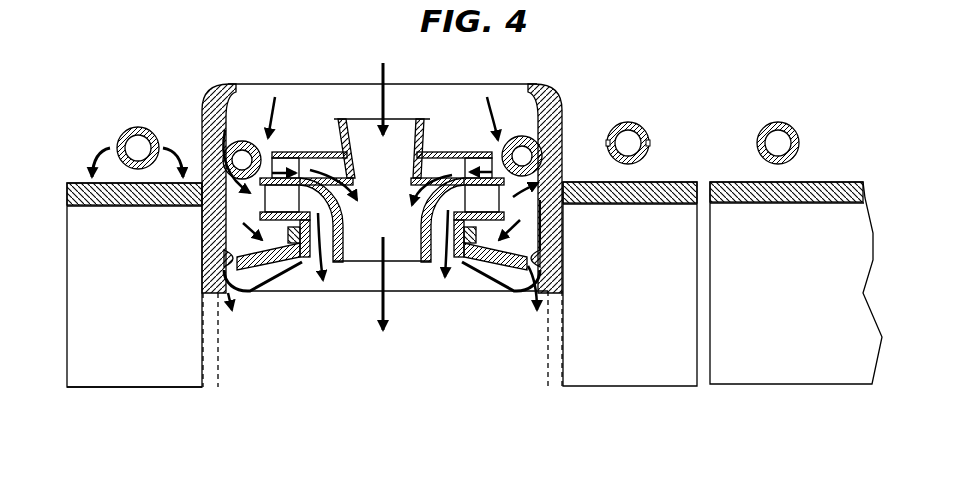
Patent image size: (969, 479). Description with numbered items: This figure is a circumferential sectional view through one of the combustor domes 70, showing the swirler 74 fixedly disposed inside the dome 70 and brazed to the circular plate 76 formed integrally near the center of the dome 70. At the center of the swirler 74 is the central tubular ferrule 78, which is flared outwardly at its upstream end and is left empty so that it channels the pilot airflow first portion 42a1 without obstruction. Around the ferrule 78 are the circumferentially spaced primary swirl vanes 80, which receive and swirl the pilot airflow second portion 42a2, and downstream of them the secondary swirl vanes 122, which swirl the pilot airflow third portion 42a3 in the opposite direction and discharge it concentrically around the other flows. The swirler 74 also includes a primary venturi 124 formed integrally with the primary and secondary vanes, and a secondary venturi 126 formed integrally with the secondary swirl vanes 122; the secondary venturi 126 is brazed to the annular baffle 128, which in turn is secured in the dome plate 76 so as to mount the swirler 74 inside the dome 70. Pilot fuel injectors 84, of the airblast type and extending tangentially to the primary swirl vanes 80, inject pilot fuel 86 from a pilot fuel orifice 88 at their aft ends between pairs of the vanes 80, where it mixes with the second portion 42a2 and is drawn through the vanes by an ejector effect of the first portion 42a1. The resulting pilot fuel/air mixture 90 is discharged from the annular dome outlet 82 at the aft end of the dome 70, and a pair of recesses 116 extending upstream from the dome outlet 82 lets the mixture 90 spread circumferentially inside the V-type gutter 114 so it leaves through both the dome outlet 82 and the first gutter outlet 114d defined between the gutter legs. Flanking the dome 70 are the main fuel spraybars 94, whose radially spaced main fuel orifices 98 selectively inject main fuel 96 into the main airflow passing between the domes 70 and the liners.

The pilot airflow first portion 42a1 is at (384, 76).
The pilot airflow second portion 42a2 is at (490, 100).
The pilot airflow third portion 42a3 is at (563, 212).
The dome 70 is at (198, 223).
The swirler 74 is at (297, 296).
The circular plate 76 is at (204, 262).
The central tubular ferrule 78 is at (339, 119).
The primary swirl vanes 80 is at (467, 152).
The annular dome outlet 82 is at (520, 388).
The pilot fuel injector 84 is at (240, 141).
The pilot fuel 86 is at (502, 156).
The pilot fuel orifice 88 is at (285, 152).
The pilot fuel/air mixture 90 is at (386, 314).
The main fuel spraybar 94 is at (133, 128).
The main fuel 96 is at (110, 147).
The main fuel orifice 98 is at (648, 143).
The circumferential V-type gutter 114 is at (66, 349).
The first gutter outlet 114d is at (137, 388).
The recess 116 is at (204, 300).
The secondary swirl vanes 122 is at (563, 242).
The primary venturi 124 is at (418, 242).
The secondary venturi 126 is at (462, 262).
The annular baffle 128 is at (508, 270).